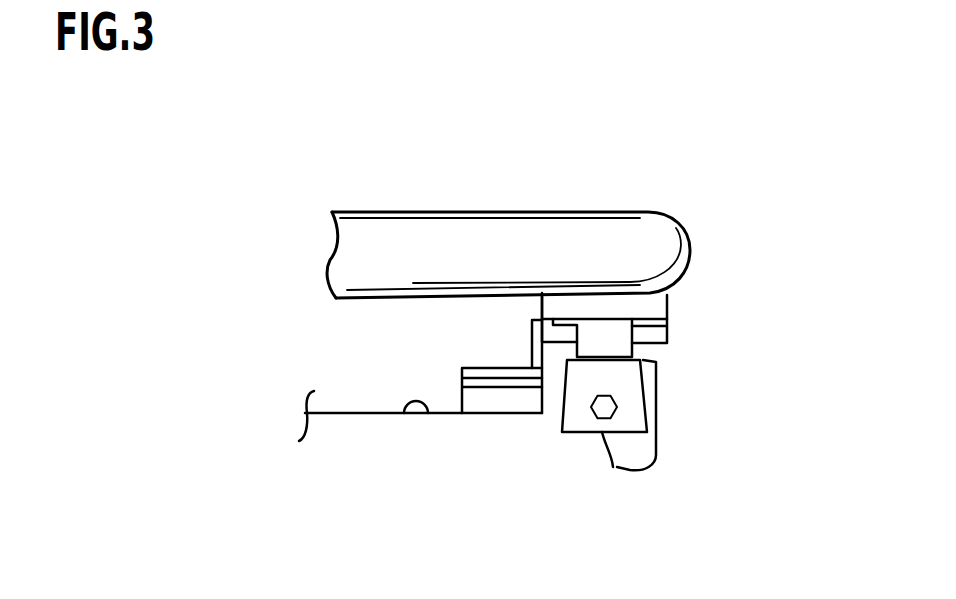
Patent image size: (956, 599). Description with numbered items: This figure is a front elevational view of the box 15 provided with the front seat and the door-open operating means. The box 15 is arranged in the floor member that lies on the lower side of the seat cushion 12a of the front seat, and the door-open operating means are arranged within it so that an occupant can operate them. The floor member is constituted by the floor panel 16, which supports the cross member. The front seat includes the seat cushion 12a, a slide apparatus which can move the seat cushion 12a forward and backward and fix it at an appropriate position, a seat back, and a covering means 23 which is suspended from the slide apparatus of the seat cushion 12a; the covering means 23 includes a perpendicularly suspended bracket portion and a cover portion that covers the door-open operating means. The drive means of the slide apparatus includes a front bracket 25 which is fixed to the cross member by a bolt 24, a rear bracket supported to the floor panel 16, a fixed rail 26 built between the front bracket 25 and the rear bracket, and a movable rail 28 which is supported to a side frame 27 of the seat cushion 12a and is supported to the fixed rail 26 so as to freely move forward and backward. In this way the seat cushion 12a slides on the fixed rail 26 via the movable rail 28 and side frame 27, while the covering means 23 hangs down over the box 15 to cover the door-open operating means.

The seat cushion 12a is at (548, 206).
The covering means 23 is at (503, 352).
The box 15 is at (504, 428).
The floor panel 16 is at (402, 414).
The side frame 27 is at (647, 310).
The fixed rail 26 is at (643, 347).
The movable rail 28 is at (650, 330).
The bolt 24 is at (614, 412).
The front bracket 25 is at (613, 470).